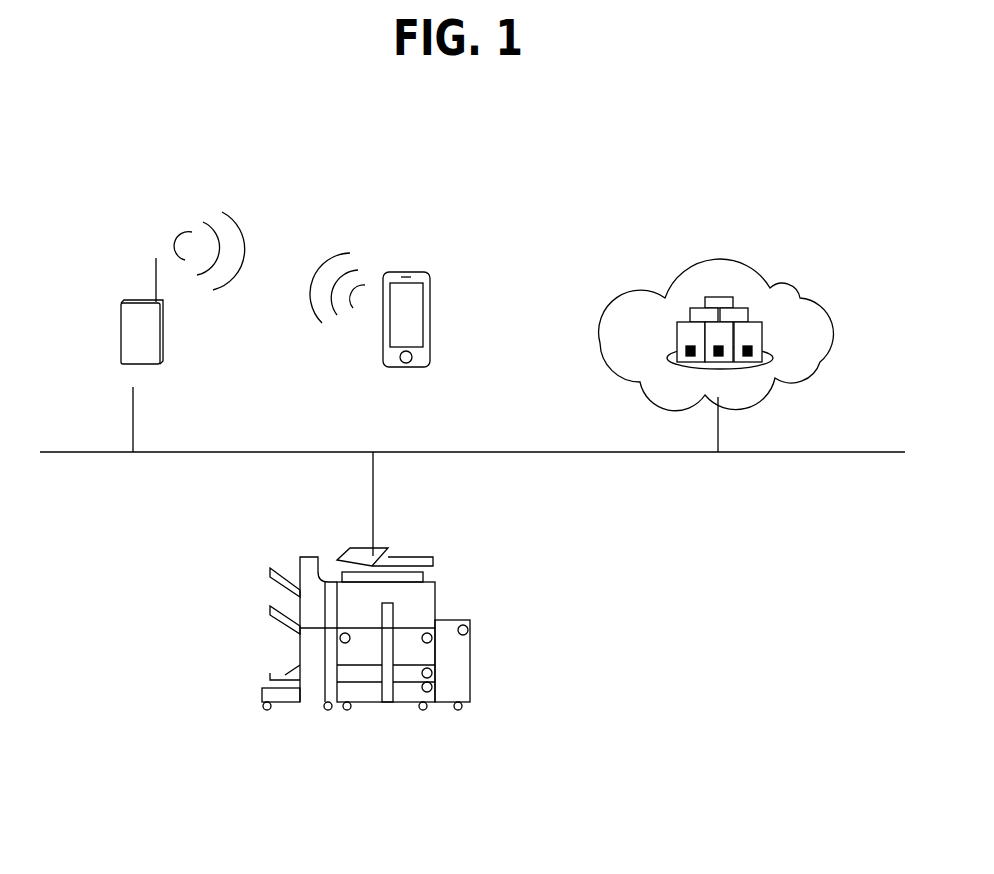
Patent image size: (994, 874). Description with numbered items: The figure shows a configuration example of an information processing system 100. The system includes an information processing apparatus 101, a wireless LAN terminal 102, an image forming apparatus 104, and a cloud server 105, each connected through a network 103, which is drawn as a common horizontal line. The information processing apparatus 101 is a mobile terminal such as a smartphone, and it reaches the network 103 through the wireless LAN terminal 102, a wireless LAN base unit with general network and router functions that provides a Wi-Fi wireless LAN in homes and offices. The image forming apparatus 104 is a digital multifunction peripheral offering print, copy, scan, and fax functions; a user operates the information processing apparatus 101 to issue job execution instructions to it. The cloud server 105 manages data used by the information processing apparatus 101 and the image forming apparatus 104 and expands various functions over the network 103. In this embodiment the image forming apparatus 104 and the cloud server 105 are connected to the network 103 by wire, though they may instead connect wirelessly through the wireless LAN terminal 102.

The information processing system 100 is at (97, 203).
The information processing apparatus 101 is at (430, 272).
The wireless LAN terminal 102 is at (120, 303).
The network 103 is at (195, 454).
The image forming apparatus 104 is at (316, 704).
The cloud server 105 is at (808, 292).